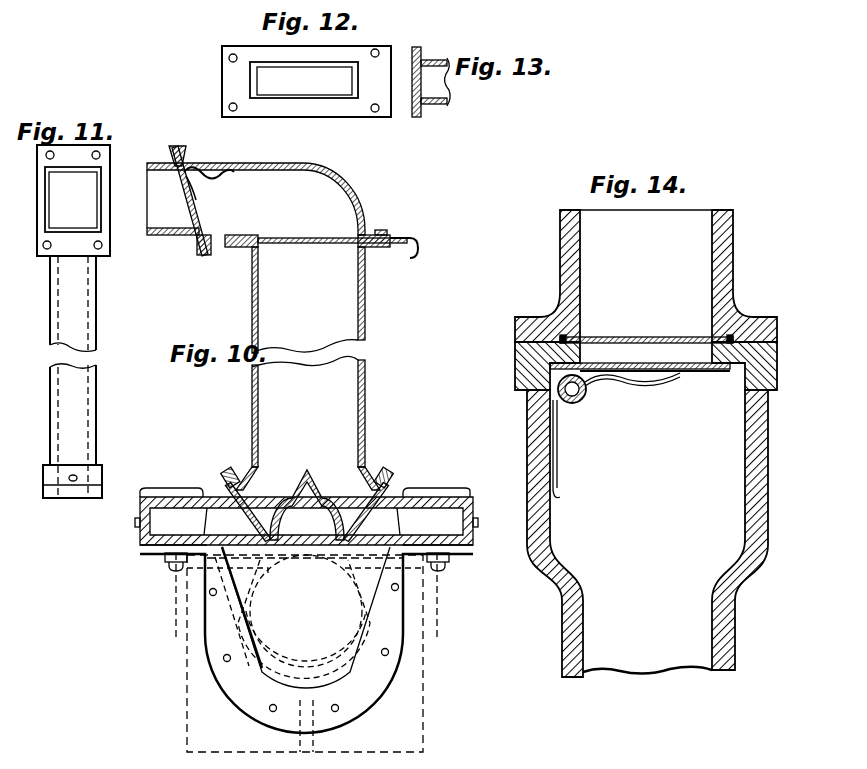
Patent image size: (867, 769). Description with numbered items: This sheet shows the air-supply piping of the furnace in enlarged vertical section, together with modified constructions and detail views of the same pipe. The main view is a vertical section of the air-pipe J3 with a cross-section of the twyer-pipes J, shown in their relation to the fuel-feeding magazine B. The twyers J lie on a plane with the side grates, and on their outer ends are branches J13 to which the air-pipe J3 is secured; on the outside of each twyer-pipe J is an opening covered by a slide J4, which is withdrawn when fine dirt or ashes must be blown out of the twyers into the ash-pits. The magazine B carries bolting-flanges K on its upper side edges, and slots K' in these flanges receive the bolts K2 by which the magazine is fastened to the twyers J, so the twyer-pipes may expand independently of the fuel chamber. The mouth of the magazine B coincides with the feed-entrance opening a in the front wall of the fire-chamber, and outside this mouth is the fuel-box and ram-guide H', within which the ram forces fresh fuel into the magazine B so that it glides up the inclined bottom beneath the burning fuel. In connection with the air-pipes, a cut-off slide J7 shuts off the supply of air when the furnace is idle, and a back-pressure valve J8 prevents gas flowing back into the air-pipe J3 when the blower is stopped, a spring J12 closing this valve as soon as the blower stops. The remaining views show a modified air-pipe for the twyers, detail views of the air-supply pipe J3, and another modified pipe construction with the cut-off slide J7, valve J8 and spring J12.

In FIG. 12, the air-pipe J3 is at (335, 90).
In FIG. 13, the air-pipe J3 is at (437, 90).
In FIG. 11, the air-pipe J3 is at (75, 302).
In FIG. 10, the air-pipe J3 is at (268, 326).
In FIG. 14, the air-pipe J3 is at (783, 547).
In FIG. 10, the cut-off slide J7 is at (310, 243).
In FIG. 14, the cut-off slide J7 is at (648, 341).
In FIG. 10, the back-pressure valve J8 is at (195, 186).
In FIG. 14, the back-pressure valve J8 is at (693, 369).
In FIG. 10, the spring J12 is at (206, 178).
In FIG. 14, the spring J12 is at (614, 379).
In FIG. 10, the branches J13 is at (231, 520).
In FIG. 10, the twyer-pipes J is at (172, 520).
In FIG. 10, the slide J4 is at (140, 546).
In FIG. 10, the bolting-flanges K is at (258, 596).
In FIG. 10, the slots K' is at (302, 576).
In FIG. 10, the bolts K2 is at (177, 562).
In FIG. 10, the feed-entrance opening a is at (304, 616).
In FIG. 10, the fuel-feeding magazine B is at (306, 639).
In FIG. 10, the fuel-box and ram-guide H' is at (305, 653).